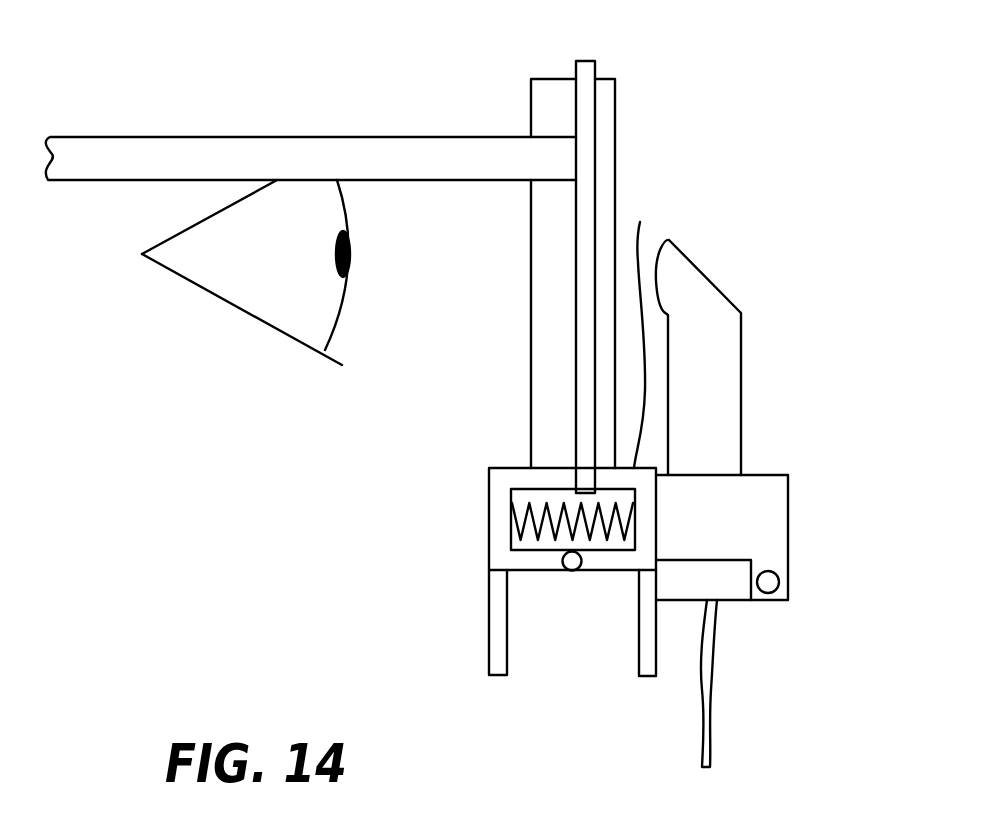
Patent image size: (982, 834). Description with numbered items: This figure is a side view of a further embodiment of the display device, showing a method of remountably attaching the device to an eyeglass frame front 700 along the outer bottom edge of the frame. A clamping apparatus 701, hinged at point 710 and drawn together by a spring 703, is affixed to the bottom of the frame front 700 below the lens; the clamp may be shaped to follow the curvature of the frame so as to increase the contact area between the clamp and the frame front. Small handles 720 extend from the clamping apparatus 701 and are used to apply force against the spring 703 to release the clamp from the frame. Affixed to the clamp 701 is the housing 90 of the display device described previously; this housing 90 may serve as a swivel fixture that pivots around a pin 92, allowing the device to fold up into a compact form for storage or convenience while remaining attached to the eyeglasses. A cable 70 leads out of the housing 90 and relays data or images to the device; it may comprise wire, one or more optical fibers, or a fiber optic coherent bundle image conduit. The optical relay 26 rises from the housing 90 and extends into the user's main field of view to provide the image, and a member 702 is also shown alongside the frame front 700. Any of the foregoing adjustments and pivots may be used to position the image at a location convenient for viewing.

The eyeglass frame front 700 is at (583, 61).
The flexible member 702 is at (640, 222).
The optical relay 26 is at (727, 400).
The clamping apparatus 701 is at (495, 480).
The spring 703 is at (517, 530).
The housing 90 is at (780, 493).
The pin 92 is at (779, 582).
The small handles 720 is at (492, 652).
The hinge point 710 is at (568, 571).
The cable 70 is at (713, 733).